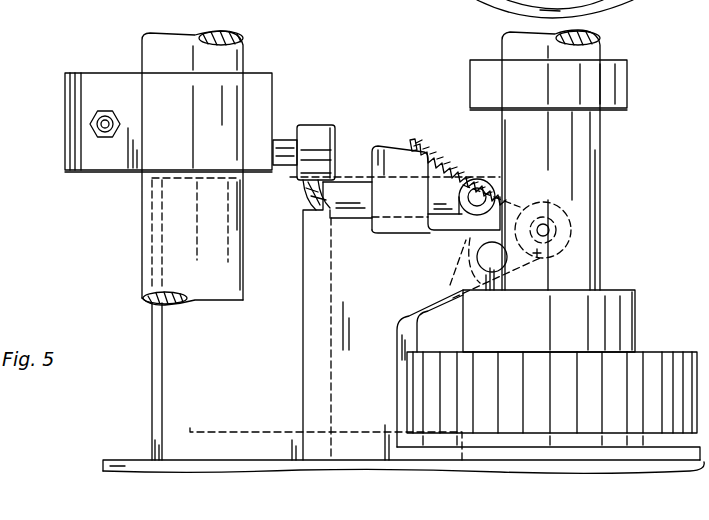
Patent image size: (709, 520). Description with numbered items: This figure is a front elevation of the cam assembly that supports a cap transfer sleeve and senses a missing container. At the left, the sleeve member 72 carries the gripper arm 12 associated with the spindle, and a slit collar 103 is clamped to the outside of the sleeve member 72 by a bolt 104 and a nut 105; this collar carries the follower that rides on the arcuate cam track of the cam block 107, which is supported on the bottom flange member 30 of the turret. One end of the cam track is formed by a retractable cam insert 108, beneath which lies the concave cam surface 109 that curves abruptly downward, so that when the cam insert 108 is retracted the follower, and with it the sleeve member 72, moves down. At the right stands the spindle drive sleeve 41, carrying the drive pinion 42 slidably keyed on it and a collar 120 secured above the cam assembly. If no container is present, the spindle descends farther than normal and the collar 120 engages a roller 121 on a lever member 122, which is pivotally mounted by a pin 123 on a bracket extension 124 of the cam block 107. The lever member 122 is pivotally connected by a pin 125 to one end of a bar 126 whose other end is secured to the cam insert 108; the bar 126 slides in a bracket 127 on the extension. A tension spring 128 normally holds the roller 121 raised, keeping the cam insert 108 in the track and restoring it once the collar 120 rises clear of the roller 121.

The gripper arm 12 is at (6, 53).
The bottom flange member 30 is at (132, 460).
The drive sleeve 41 is at (598, 152).
The drive pinion 42 is at (668, 350).
The sleeve member 72 is at (155, 60).
The slit collar 103 is at (90, 168).
The bolt 104 is at (96, 134).
The nut 105 is at (91, 120).
The cam block 107 is at (243, 347).
The retractable cam insert 108 is at (309, 202).
The cam surface 109 is at (300, 188).
The collar 120 is at (620, 82).
The roller 121 is at (538, 257).
The lever member 122 is at (530, 193).
The pin 123 is at (489, 258).
The bracket extension 124 is at (397, 297).
The pin 125 is at (468, 197).
The bar 126 is at (349, 208).
The bracket 127 is at (388, 156).
The tension spring 128 is at (445, 158).